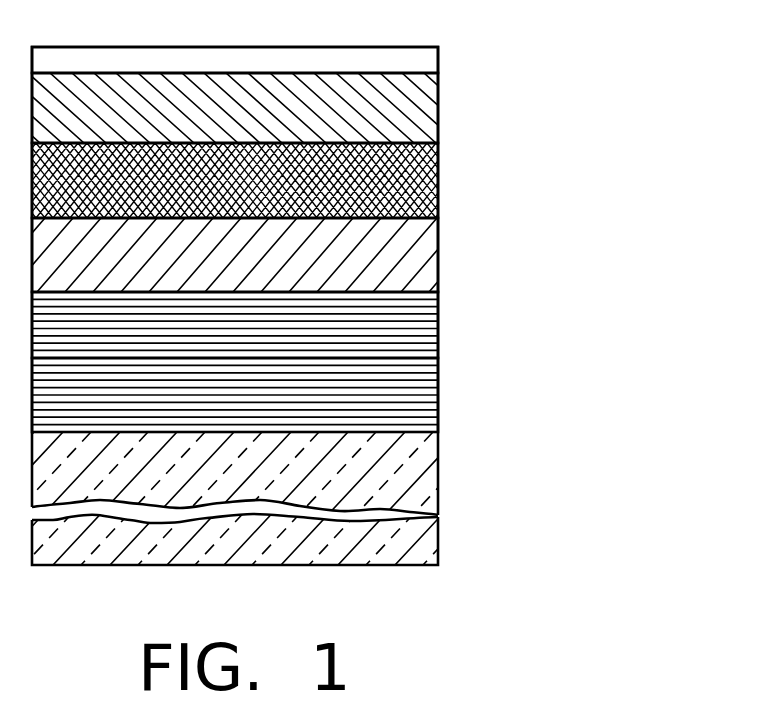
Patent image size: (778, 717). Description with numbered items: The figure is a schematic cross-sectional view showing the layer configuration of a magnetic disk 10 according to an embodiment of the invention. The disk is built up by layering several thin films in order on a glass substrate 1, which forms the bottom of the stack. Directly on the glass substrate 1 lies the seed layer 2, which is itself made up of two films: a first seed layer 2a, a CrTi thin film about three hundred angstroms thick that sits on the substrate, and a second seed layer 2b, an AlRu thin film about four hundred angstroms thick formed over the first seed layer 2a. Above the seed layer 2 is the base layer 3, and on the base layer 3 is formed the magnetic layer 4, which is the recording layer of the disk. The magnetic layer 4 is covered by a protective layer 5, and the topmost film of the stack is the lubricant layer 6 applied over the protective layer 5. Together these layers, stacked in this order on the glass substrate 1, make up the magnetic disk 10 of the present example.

The magnetic disk 10 is at (593, 257).
The lubricant layer 6 is at (438, 58).
The protective layer 5 is at (438, 114).
The magnetic layer 4 is at (438, 183).
The base layer 3 is at (438, 259).
The seed layer 2 is at (327, 362).
The second seed layer 2b is at (438, 338).
The first seed layer 2a is at (438, 400).
The glass substrate 1 is at (570, 440).